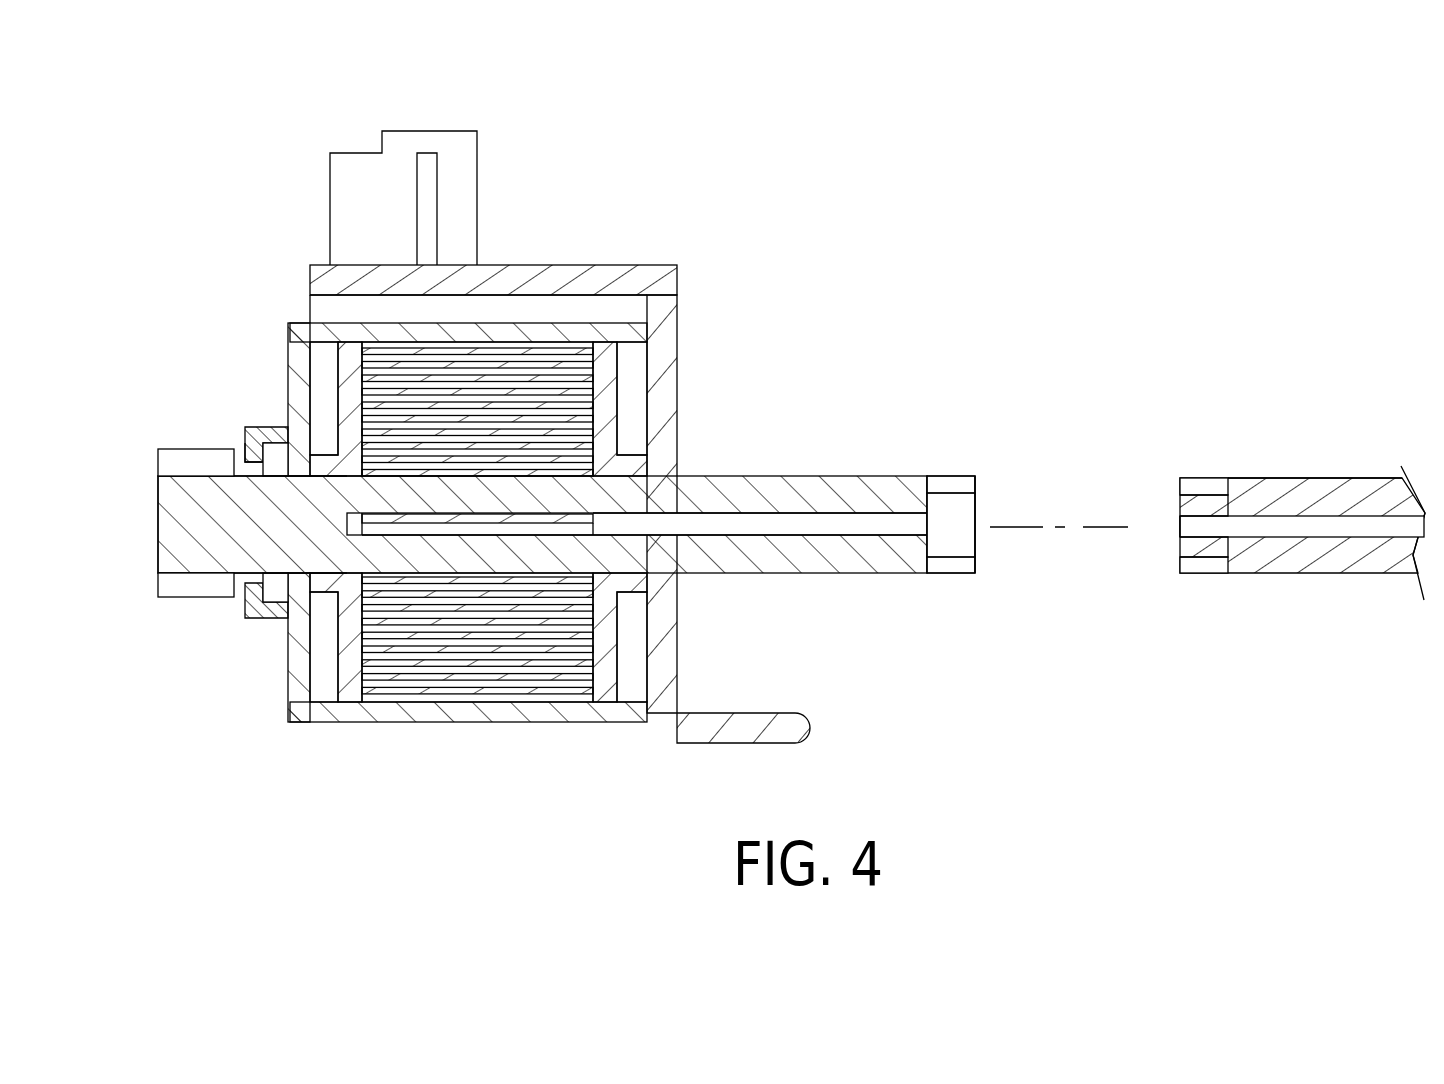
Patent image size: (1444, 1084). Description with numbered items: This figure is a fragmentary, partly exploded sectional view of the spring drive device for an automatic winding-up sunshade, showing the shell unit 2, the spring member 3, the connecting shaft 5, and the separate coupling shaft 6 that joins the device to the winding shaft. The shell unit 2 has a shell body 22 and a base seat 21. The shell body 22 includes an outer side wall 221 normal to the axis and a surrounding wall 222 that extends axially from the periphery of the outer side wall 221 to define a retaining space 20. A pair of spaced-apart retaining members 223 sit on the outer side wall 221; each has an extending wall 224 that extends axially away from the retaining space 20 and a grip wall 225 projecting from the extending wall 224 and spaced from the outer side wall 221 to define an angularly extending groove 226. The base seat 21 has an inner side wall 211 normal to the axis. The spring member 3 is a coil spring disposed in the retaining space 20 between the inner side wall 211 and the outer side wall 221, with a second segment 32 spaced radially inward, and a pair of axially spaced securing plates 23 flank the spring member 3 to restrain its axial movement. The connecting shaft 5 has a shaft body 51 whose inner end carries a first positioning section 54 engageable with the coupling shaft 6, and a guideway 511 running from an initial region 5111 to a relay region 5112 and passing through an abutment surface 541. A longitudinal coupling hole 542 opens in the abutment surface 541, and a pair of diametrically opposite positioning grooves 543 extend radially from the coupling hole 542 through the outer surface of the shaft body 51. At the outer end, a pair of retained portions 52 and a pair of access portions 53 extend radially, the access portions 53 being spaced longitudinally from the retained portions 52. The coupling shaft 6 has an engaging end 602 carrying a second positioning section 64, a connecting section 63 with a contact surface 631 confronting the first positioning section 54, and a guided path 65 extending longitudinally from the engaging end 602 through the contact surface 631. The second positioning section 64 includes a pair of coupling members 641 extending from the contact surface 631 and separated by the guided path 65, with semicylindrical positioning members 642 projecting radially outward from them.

The shell unit 2 is at (632, 196).
The retaining space 20 is at (325, 360).
The base seat 21 is at (658, 260).
The inner side wall 211 is at (668, 337).
The shell body 22 is at (279, 320).
The outer side wall 221 is at (297, 350).
The surrounding wall 222 is at (353, 332).
The retaining members 223 is at (190, 323).
The extending wall 224 is at (268, 430).
The grip wall 225 is at (250, 455).
The angularly extending groove 226 is at (280, 447).
The spring member 3 is at (457, 693).
The securing plates 23 is at (350, 683).
The second segment 32 is at (412, 517).
The connecting shaft 5 is at (849, 464).
The shaft body 51 is at (745, 490).
The guideway 511 is at (890, 528).
The initial region 5111 is at (502, 530).
The relay region 5112 is at (843, 530).
The retained portions 52 is at (265, 477).
The access portions 53 is at (177, 465).
The first positioning section 54 is at (953, 470).
The abutment surface 541 is at (975, 485).
The coupling hole 542 is at (955, 513).
The positioning grooves 543 is at (963, 486).
The coupling shaft 6 is at (1291, 434).
The engaging end 602 is at (1178, 537).
The connecting section 63 is at (1378, 490).
The contact surface 631 is at (1243, 480).
The second positioning section 64 is at (1181, 464).
The coupling members 641 is at (1190, 507).
The positioning members 642 is at (1205, 487).
The guided path 65 is at (1335, 527).